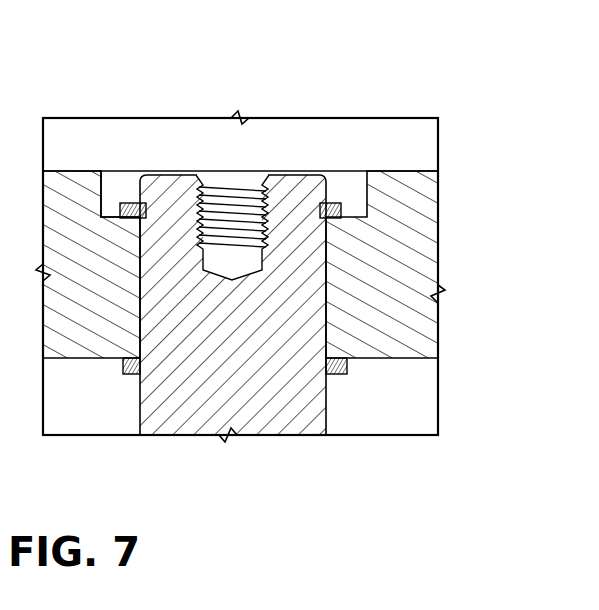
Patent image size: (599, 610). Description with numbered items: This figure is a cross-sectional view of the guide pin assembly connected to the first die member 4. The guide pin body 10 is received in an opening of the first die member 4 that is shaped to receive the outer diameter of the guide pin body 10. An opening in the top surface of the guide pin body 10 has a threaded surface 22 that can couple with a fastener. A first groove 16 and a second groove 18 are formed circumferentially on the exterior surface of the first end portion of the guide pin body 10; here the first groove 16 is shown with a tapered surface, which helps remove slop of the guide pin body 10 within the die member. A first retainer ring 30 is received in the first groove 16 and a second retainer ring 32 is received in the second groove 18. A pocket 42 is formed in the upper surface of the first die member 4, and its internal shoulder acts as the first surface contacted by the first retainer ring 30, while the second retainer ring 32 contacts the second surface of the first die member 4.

The first die member 4 is at (413, 222).
The guide pin body 10 is at (270, 388).
The first groove 16 is at (128, 202).
The second groove 18 is at (128, 374).
The threaded surface 22 is at (245, 190).
The first retainer ring 30 is at (345, 200).
The second retainer ring 32 is at (347, 375).
The pocket 42 is at (112, 190).